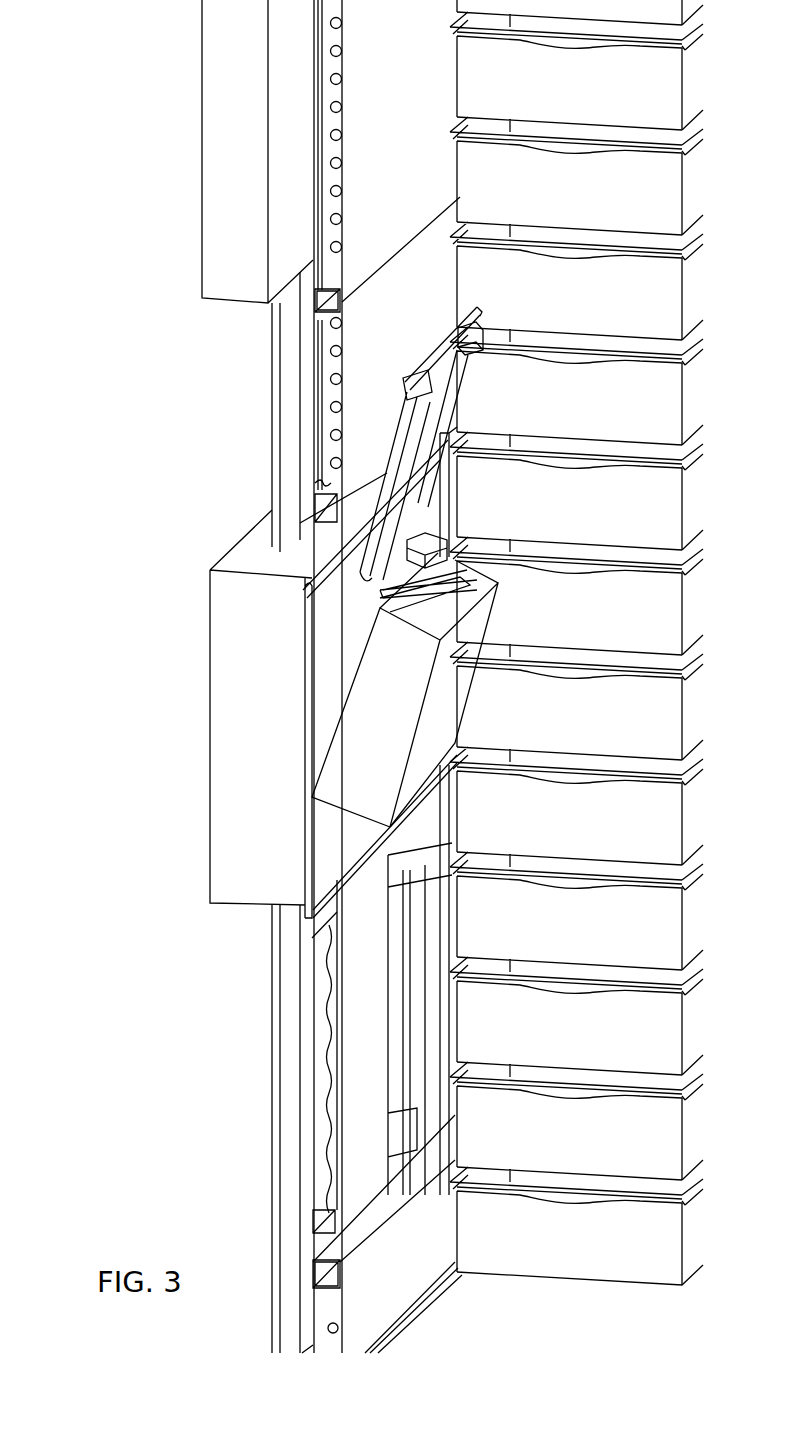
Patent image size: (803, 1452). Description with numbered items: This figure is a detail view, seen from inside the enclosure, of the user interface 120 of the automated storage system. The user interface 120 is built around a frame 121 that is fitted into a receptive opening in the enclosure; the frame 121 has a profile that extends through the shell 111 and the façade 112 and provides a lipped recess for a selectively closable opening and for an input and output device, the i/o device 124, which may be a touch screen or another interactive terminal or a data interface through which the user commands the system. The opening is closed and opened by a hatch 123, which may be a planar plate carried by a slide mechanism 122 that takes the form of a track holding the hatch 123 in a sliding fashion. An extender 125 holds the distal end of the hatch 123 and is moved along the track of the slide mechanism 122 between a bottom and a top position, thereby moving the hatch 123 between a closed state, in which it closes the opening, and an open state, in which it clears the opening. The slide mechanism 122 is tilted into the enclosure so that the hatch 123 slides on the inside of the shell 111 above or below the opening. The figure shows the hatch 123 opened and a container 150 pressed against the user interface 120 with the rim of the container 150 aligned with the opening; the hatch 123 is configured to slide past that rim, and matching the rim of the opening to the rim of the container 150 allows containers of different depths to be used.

The shell 111 is at (330, 1132).
The façade 112 is at (275, 1040).
The user interface 120 is at (153, 766).
The frame 121 is at (210, 607).
The slide mechanism 122 is at (328, 710).
The hatch 123 is at (387, 472).
The i/o device 124 is at (452, 543).
The extender 125 is at (423, 430).
The container 150 is at (437, 757).